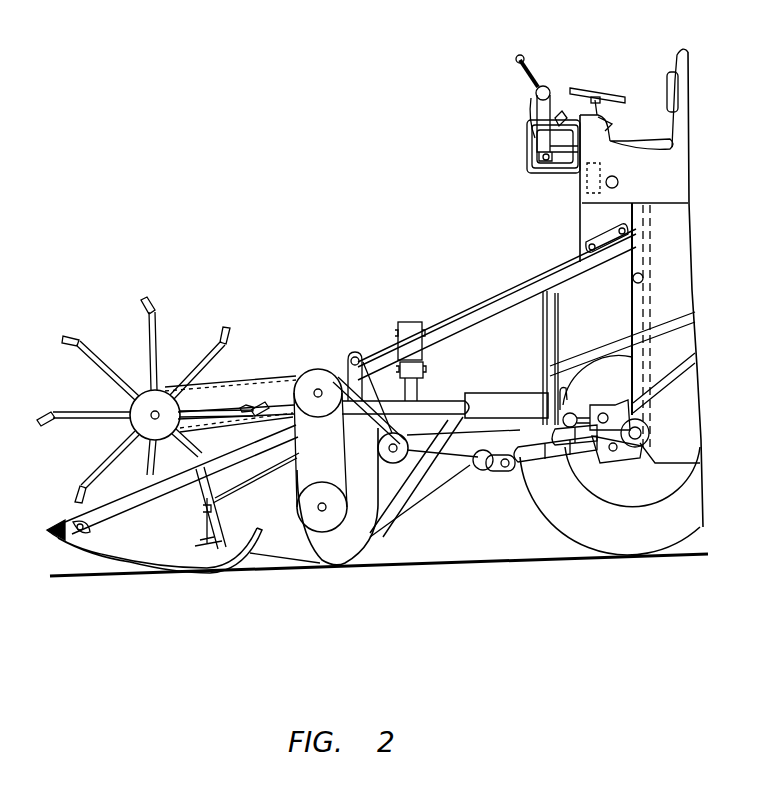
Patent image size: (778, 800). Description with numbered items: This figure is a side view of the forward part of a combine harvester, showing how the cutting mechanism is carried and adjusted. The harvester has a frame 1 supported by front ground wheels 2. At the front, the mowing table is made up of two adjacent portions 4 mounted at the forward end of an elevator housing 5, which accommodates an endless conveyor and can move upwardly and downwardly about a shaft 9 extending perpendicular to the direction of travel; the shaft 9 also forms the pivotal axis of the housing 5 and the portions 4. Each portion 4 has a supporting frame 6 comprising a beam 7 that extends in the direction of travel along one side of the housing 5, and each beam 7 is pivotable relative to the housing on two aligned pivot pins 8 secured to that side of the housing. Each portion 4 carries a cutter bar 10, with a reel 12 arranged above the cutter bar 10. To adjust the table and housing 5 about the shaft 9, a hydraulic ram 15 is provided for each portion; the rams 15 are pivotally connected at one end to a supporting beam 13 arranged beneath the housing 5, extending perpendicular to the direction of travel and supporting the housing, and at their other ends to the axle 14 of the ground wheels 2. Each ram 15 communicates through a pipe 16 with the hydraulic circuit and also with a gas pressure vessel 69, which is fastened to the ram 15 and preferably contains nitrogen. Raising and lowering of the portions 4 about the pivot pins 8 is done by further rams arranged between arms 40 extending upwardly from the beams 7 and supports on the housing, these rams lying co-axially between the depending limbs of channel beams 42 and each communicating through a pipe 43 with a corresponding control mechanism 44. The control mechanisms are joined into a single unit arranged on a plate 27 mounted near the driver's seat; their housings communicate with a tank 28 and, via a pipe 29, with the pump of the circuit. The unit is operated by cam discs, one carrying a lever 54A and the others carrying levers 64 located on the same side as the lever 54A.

The frame 1 is at (673, 466).
The front ground wheels 2 is at (566, 524).
The portions of the mowing table 4 is at (300, 571).
The elevator housing 5 is at (497, 330).
The supporting frame 6 is at (468, 401).
The beam 7 is at (512, 402).
The pivot pins 8 is at (564, 385).
The shaft 9 is at (633, 281).
The cutter bar 10 is at (192, 545).
The reel 12 is at (160, 333).
The supporting beam 13 is at (486, 471).
The axle 14 is at (650, 433).
The hydraulic ram 15 is at (544, 459).
The pipe 16 is at (629, 463).
The plate 27 is at (556, 163).
The tank 28 is at (623, 184).
The pipe 29 is at (527, 132).
The arms 40 is at (440, 386).
The channel beams 42 is at (412, 324).
The pipe 43 is at (522, 288).
The control mechanism 44 is at (537, 142).
The lever 54A is at (527, 58).
The lever 64 is at (539, 80).
The gas pressure vessel 69 is at (613, 232).